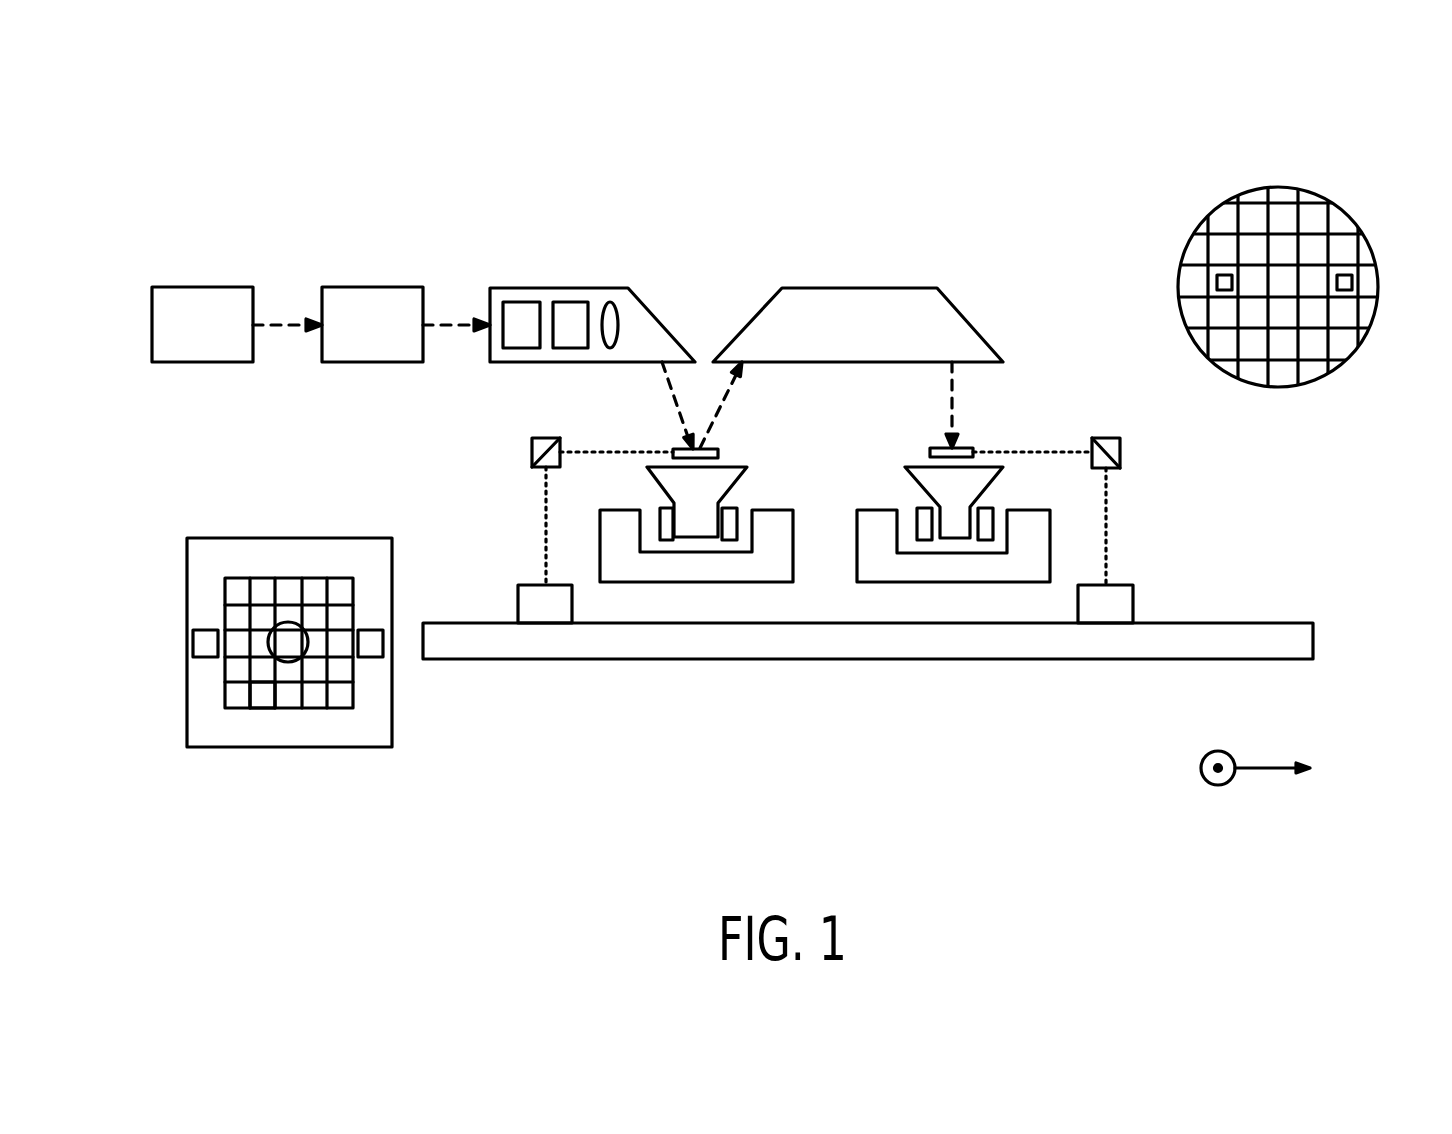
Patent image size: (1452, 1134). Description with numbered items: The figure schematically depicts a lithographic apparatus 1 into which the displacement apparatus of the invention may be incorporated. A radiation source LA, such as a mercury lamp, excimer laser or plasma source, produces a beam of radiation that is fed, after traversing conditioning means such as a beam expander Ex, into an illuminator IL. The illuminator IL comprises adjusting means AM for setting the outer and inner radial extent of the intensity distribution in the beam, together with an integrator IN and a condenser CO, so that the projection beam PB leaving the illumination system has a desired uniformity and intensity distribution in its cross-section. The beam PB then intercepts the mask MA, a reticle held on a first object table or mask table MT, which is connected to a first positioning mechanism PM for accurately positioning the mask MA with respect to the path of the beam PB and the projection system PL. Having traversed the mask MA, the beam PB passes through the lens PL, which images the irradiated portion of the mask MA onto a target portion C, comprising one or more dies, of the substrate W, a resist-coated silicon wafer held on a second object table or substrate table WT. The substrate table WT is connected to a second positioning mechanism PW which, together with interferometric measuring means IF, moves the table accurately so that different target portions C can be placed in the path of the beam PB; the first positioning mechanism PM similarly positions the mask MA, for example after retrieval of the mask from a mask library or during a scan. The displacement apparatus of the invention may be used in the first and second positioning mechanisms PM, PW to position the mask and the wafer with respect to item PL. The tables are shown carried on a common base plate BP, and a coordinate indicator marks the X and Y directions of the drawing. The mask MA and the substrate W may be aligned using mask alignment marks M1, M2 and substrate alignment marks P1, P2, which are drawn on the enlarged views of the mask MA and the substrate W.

The radiation source LA is at (202, 324).
The beam expander Ex is at (372, 324).
The illuminator IL is at (490, 288).
The adjusting means AM is at (518, 302).
The integrator IN is at (572, 302).
The condenser CO is at (612, 302).
The lithographic apparatus 1 is at (713, 300).
The projection system PL is at (858, 325).
The projection beam PB is at (673, 399).
The interferometric measuring means IF is at (532, 440).
The mask MA is at (682, 460).
The mask table MT is at (693, 540).
The first positioning mechanism PM is at (742, 582).
The substrate table WT is at (950, 540).
The second positioning mechanism PW is at (1002, 582).
The base plate BP is at (837, 647).
The substrate W is at (1161, 333).
The substrate alignment mark P1 is at (1217, 282).
The substrate alignment mark P2 is at (1352, 282).
The target portion C is at (263, 697).
The mask alignment mark M1 is at (193, 643).
The mask alignment mark M2 is at (370, 657).
The X axis X is at (1287, 772).
The Y axis Y is at (1218, 749).